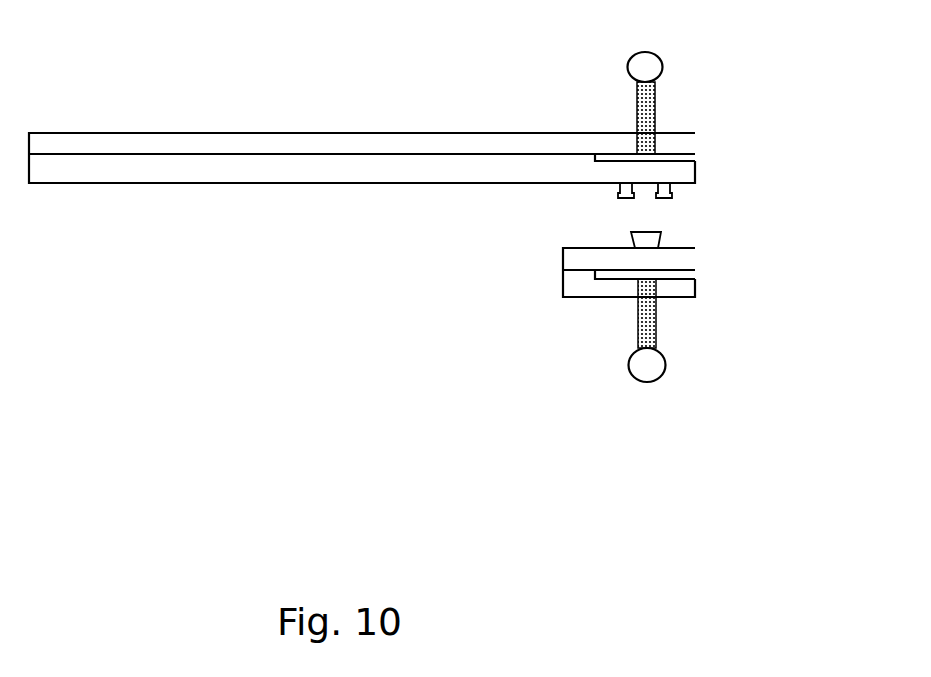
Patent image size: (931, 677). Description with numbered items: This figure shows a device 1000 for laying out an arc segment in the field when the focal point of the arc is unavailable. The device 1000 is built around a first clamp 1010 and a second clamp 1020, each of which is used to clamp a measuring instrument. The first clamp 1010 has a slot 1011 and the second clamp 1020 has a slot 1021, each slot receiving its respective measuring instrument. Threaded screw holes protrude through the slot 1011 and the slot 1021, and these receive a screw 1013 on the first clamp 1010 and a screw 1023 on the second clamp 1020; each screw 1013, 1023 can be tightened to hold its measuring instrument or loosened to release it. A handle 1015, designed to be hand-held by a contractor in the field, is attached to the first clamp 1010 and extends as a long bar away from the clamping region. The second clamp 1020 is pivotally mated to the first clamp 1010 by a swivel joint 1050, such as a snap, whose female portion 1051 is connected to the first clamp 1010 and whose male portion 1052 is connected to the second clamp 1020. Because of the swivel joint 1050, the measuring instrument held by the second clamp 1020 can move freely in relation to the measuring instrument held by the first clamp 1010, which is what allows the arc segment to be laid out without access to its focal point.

The device 1000 is at (397, 388).
The first clamp 1010 is at (603, 100).
The slot 1011 is at (595, 154).
The screw 1013 is at (652, 93).
The handle 1015 is at (112, 133).
The second clamp 1020 is at (595, 279).
The slot 1021 is at (613, 322).
The screw 1023 is at (653, 322).
The swivel joint 1050 is at (792, 172).
The female portion 1051 is at (672, 192).
The male portion 1052 is at (661, 237).